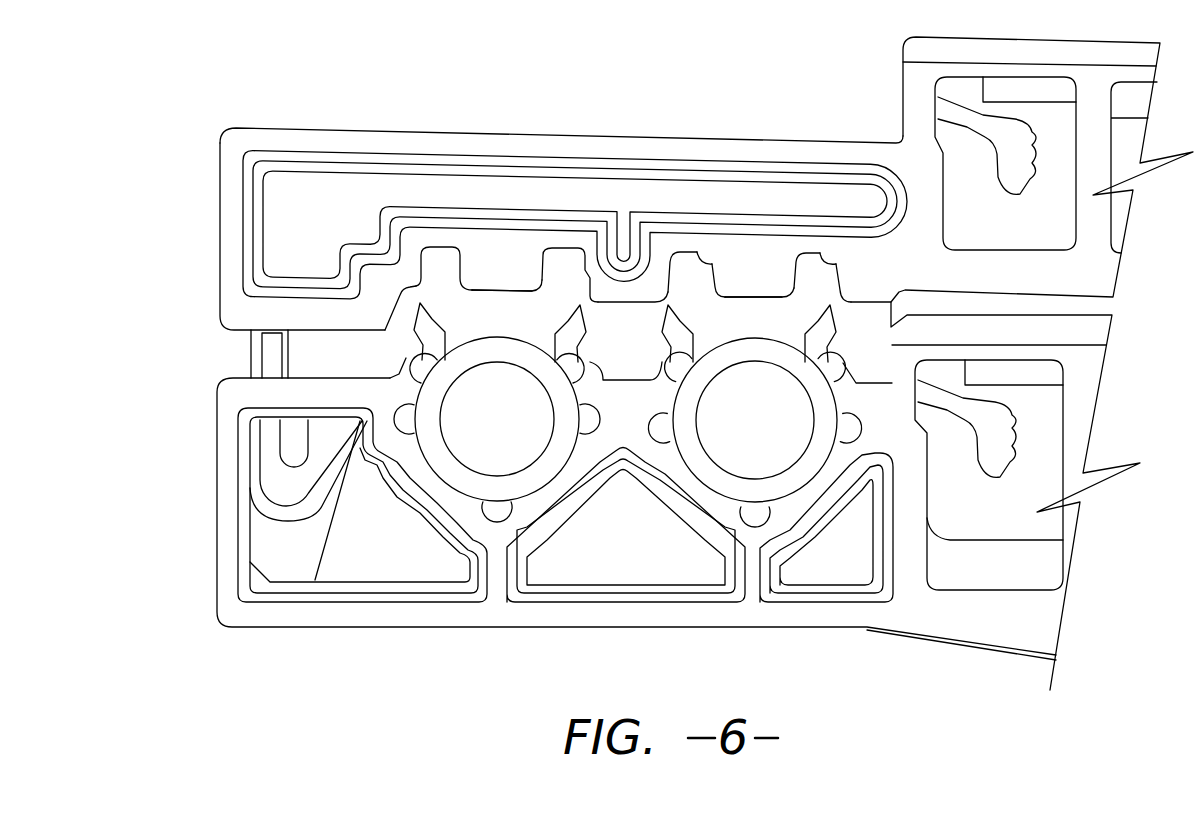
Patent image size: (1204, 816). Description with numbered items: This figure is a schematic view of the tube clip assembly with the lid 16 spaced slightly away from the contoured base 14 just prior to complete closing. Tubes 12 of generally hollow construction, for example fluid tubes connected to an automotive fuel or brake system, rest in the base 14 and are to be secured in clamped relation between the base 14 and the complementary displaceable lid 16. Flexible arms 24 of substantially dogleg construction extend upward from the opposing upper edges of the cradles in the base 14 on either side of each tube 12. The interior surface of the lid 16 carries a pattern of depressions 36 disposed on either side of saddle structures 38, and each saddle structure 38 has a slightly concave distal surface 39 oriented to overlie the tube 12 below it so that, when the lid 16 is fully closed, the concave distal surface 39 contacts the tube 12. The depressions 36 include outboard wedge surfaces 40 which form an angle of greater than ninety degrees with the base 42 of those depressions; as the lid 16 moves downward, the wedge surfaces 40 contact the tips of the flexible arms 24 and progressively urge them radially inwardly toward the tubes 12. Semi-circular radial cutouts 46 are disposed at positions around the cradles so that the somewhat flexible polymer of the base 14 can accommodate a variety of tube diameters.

The tube 12 is at (447, 463).
The base 14 is at (512, 628).
The lid 16 is at (749, 134).
The flexible arm 24 is at (405, 358).
The depression 36 is at (443, 265).
The saddle structure 38 is at (490, 272).
The concave distal surface 39 is at (497, 292).
The outboard wedge surface 40 is at (433, 257).
The base of depression 42 is at (713, 262).
The radial cutout 46 is at (497, 513).